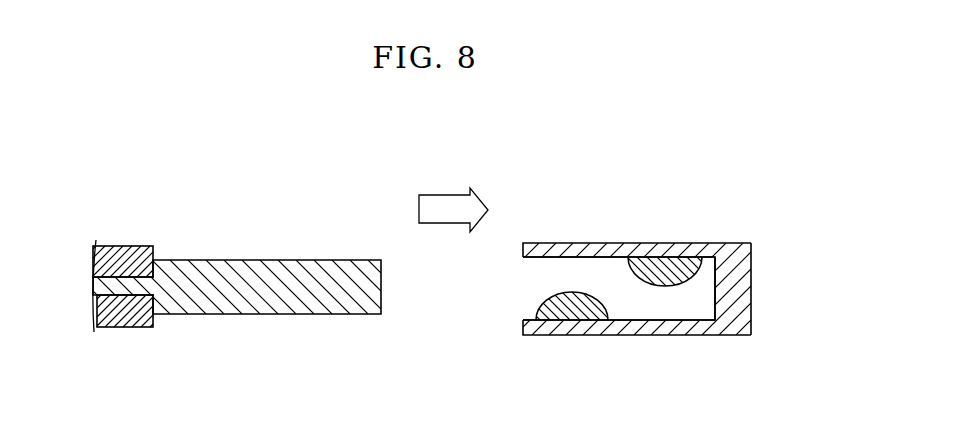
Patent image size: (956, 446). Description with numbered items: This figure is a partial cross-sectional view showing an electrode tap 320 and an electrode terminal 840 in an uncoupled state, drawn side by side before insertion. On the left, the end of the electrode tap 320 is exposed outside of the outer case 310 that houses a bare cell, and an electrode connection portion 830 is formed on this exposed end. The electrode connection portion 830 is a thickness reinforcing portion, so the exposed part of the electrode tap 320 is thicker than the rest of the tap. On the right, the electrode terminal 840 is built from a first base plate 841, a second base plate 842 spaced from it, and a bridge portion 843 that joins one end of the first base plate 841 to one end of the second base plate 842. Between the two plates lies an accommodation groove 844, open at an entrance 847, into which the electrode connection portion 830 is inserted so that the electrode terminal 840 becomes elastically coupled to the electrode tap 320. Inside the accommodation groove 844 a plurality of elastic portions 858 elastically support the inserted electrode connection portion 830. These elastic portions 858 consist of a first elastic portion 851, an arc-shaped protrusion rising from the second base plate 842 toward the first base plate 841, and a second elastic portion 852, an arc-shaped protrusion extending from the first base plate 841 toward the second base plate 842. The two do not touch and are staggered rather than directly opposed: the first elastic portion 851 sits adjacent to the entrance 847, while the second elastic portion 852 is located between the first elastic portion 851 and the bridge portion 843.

The outer case 310 is at (132, 251).
The electrode tap 320 is at (125, 282).
The electrode connection portion 830 is at (235, 252).
The electrode terminal 840 is at (641, 269).
The first base plate 841 is at (572, 250).
The second base plate 842 is at (595, 327).
The bridge portion 843 is at (741, 322).
The accommodation groove 844 is at (694, 305).
The entrance 847 is at (486, 293).
The first elastic portion 851 is at (582, 302).
The second elastic portion 852 is at (661, 270).
The elastic portions 858 is at (619, 242).